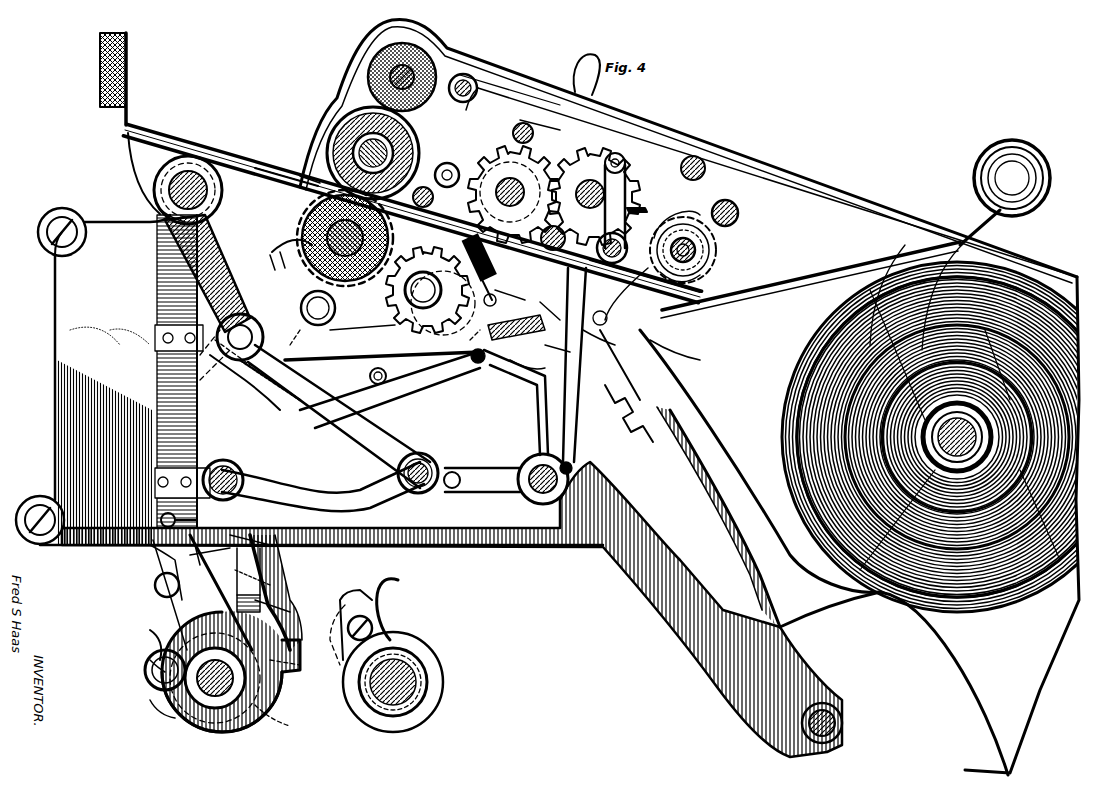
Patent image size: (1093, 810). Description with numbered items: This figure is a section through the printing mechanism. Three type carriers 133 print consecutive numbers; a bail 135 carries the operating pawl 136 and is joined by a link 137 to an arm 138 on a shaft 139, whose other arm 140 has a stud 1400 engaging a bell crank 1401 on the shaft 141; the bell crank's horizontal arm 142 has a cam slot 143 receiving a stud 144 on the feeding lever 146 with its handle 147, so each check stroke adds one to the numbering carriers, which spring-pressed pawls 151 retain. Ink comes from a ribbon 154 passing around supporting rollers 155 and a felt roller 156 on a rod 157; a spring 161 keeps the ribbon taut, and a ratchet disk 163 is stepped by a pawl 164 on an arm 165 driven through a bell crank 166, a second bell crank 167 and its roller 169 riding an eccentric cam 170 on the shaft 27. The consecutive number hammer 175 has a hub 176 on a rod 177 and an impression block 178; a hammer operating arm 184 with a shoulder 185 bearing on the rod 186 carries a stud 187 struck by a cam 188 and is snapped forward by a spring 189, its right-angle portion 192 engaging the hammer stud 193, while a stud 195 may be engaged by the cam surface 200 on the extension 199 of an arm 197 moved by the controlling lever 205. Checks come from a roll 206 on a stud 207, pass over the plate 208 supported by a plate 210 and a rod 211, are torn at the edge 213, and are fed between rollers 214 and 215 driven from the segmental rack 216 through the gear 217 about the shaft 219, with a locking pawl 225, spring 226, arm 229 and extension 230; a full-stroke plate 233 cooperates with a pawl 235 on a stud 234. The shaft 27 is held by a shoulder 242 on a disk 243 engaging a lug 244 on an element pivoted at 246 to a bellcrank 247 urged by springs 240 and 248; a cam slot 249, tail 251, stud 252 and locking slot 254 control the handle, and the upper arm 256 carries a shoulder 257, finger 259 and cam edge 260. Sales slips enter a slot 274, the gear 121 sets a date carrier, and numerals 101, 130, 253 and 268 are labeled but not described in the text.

The shaft 27 is at (155, 714).
The pivot stud 101 is at (395, 660).
The gear 121 is at (588, 150).
The ratchet wheel 130 is at (422, 166).
The type carriers 133 is at (510, 90).
The bail 135 is at (543, 129).
The operating and carrying pawl 136 is at (565, 138).
The link 137 is at (627, 160).
The arm 138 is at (720, 190).
The shaft 139 is at (618, 240).
The arm 140 is at (645, 274).
The shaft 141 is at (570, 470).
The horizontal arm 142 is at (482, 480).
The cam slot 143 is at (339, 416).
The stud 144 is at (430, 458).
The feeding lever 146 is at (598, 422).
The operating handle 147 is at (960, 245).
The spring pressed pawls 151 is at (514, 194).
The inked ribbon 154 is at (692, 135).
The supporting rollers 155 is at (468, 76).
The roller 156 is at (715, 258).
The rod 157 is at (705, 250).
The spring 161 is at (660, 195).
The ratchet disk 163 is at (705, 272).
The pawl 164 is at (636, 217).
The arm 165 is at (672, 315).
The bell crank 166 is at (580, 371).
The second bell crank 167 is at (365, 548).
The roller 169 is at (731, 210).
The eccentric cam 170 is at (292, 730).
The consecutive number hammer 175 is at (265, 345).
The hub 176 is at (165, 193).
The rod 177 is at (158, 203).
The impression block 178 is at (511, 295).
The arm 184 is at (172, 470).
The shoulder 185 is at (180, 371).
The rod 186 is at (240, 466).
The stud 187 is at (150, 690).
The cam 188 is at (285, 706).
The spring 189 is at (178, 513).
The right angle portion 192 is at (245, 375).
The stud 193 is at (262, 375).
The stud 195 is at (504, 305).
The arm 197 is at (560, 351).
The extension 199 is at (527, 368).
The cam surface 200 is at (496, 291).
The controlling lever 205 is at (565, 62).
The roll 206 is at (805, 400).
The stud 207 is at (950, 437).
The plate 208 is at (300, 176).
The plate 210 is at (290, 168).
The rod 211 is at (545, 310).
The rear edge 213 is at (315, 175).
The roller 214 is at (300, 212).
The roller 215 is at (325, 150).
The segmental rack 216 is at (640, 420).
The gear 217 is at (382, 345).
The shaft 219 is at (300, 225).
The locking pawl 225 is at (443, 303).
The spring 226 is at (275, 300).
The arm 229 is at (280, 250).
The rearward extension 230 is at (240, 237).
The plate 233 is at (391, 376).
The stud 234 is at (318, 308).
The pawl 235 is at (362, 332).
The spring 240 is at (290, 400).
The shoulder 242 is at (150, 664).
The disk 243 is at (275, 638).
The lug 244 is at (152, 644).
The pivot 246 is at (155, 590).
The bellcrank 247 is at (202, 592).
The spring 248 is at (263, 557).
The cam slot 249 is at (270, 580).
The tail 251 is at (210, 562).
The stud 252 is at (150, 565).
The pin 253 is at (284, 610).
The locking slot 254 is at (425, 450).
The upper arm 256 is at (390, 390).
The shoulder 257 is at (516, 402).
The finger 259 is at (516, 327).
The cam edge 260 is at (393, 412).
The pivot 268 is at (480, 365).
The slot 274 is at (745, 300).
The stud 1400 is at (681, 350).
The bell crank 1401 is at (596, 332).